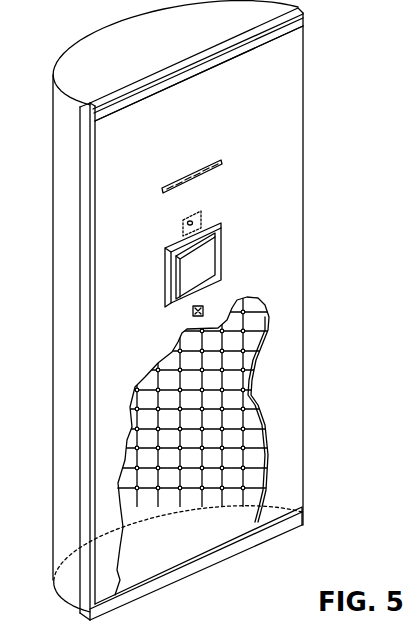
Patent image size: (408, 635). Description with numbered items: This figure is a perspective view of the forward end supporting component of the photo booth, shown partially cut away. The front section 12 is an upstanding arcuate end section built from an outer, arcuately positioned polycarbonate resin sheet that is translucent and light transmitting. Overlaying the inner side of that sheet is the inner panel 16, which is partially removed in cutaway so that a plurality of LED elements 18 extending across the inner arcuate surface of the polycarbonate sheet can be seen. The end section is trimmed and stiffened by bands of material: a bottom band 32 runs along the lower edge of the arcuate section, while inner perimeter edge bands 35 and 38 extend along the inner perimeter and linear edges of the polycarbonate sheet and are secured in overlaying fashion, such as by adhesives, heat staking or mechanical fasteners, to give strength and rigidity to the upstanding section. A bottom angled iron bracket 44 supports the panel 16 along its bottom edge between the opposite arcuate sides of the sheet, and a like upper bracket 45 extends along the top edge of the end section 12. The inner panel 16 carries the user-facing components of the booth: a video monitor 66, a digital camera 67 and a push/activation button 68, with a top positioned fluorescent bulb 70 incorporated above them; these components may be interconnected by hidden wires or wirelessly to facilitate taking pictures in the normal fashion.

The front section 12 is at (62, 282).
The inner panel 16 is at (191, 316).
The LED elements 18 is at (222, 476).
The bottom band 32 is at (58, 582).
The inner perimeter edge band 35 is at (78, 380).
The inner perimeter edge band 38 is at (190, 62).
The bottom angled iron bracket 44 is at (178, 576).
The upper bracket 45 is at (177, 86).
The video monitor 66 is at (212, 262).
The camera 67 is at (192, 222).
The push/activation button 68 is at (206, 312).
The fluorescent bulb 70 is at (223, 160).